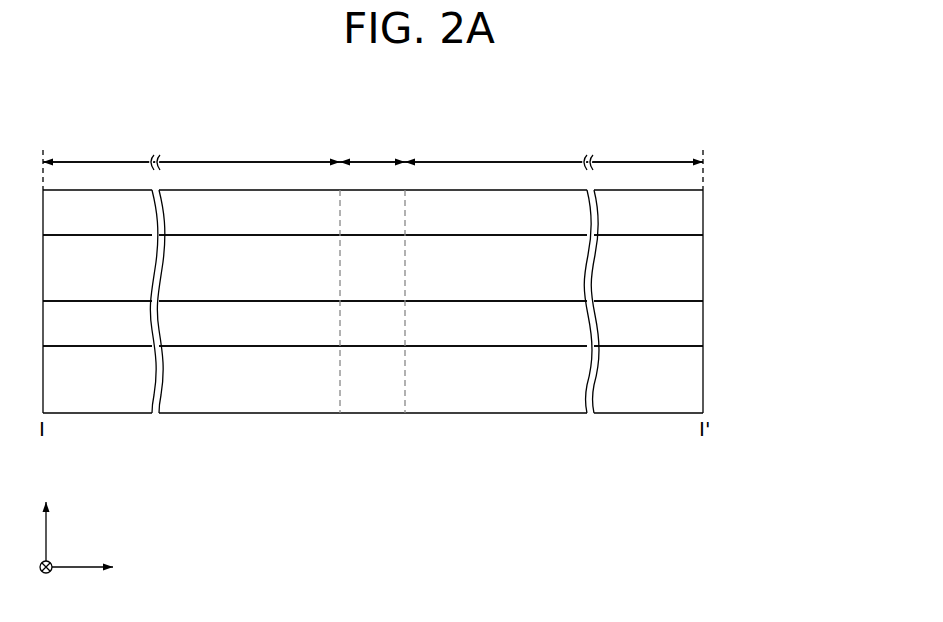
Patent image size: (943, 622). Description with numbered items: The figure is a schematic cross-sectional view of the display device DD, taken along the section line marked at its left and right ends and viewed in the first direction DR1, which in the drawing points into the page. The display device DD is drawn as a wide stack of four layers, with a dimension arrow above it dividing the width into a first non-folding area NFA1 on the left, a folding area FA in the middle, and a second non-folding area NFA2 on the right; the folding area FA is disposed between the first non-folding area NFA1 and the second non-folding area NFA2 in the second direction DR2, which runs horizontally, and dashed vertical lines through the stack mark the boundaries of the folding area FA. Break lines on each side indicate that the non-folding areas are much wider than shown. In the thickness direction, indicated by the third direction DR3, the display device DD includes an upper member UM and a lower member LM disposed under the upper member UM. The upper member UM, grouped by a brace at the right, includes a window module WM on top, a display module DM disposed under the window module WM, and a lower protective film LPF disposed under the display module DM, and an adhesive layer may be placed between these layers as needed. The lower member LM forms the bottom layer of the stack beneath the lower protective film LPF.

The display device DD is at (438, 247).
The window module WM is at (693, 214).
The display module DM is at (693, 271).
The lower protective film LPF is at (411, 323).
The upper member UM is at (438, 268).
The lower member LM is at (693, 381).
The first non-folding area NFA1 is at (191, 152).
The folding area FA is at (372, 273).
The second non-folding area NFA2 is at (554, 152).
The first direction DR1 is at (46, 581).
The second direction DR2 is at (101, 568).
The third direction DR3 is at (46, 518).